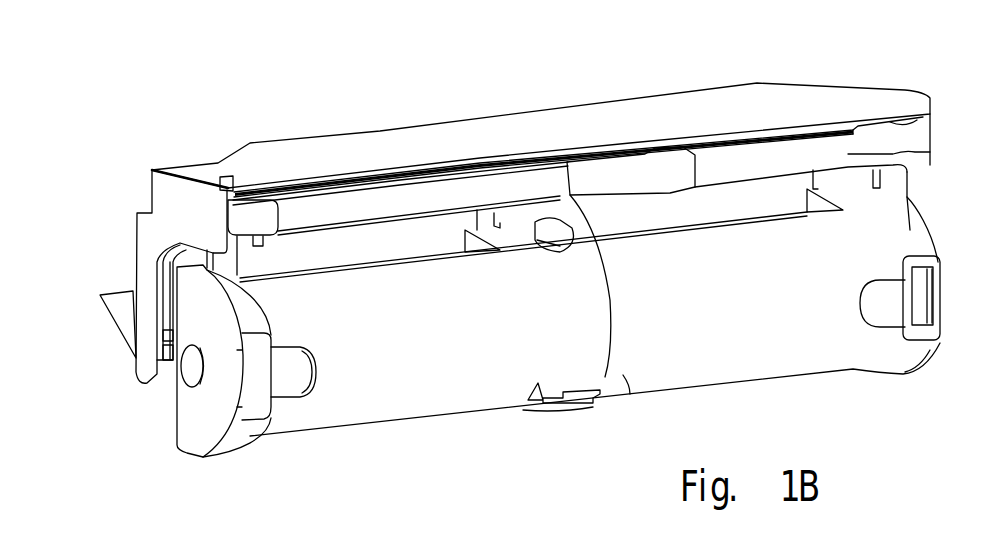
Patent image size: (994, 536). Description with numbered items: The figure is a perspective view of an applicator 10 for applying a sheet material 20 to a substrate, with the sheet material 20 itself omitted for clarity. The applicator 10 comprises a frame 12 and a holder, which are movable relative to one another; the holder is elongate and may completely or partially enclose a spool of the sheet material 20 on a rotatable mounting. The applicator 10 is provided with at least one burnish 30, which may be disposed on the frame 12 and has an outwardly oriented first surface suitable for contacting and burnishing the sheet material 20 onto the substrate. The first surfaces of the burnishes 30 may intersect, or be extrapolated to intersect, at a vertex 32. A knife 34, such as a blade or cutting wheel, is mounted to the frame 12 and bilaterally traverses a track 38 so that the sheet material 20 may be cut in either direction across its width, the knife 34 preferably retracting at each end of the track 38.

The applicator 10 is at (486, 229).
The frame 12 is at (165, 190).
The sheet material 20 is at (113, 321).
The burnish 30 is at (541, 103).
The vertex 32 is at (514, 148).
The knife 34 is at (632, 154).
The track 38 is at (720, 143).